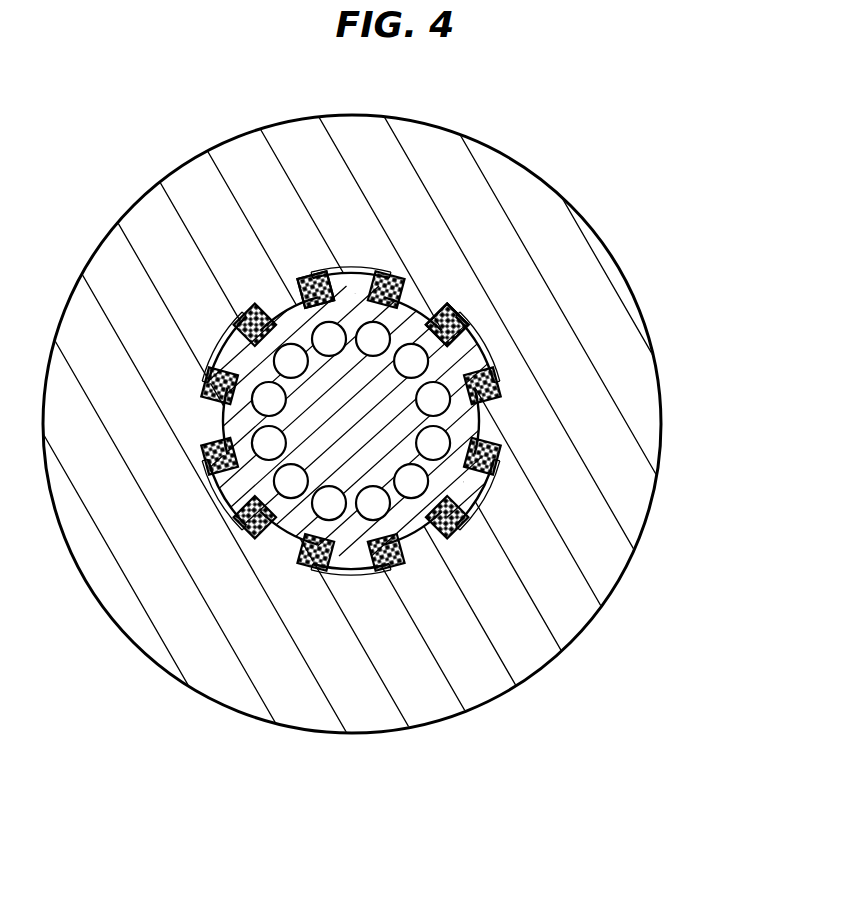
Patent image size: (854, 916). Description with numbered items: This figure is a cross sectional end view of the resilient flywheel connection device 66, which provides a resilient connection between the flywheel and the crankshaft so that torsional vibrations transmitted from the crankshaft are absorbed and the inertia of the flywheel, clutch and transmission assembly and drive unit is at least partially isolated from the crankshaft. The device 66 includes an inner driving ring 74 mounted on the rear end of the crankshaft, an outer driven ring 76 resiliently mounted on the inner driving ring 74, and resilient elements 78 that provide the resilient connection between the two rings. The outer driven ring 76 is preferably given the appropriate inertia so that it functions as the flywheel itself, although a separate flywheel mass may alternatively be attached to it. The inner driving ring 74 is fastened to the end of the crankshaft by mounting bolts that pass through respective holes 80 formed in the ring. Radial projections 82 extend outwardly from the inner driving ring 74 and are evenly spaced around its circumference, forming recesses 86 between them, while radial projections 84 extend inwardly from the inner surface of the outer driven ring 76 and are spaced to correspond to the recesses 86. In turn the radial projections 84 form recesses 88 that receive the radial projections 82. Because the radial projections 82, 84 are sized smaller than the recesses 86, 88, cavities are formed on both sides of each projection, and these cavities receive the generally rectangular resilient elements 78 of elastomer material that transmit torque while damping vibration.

The resilient flywheel connection device 66 is at (368, 424).
The inner driving ring 74 is at (395, 457).
The outer driven ring 76 is at (593, 483).
The resilient elements 78 is at (415, 300).
The holes 80 is at (296, 352).
The radial projections 82 is at (327, 332).
The radial projections 84 is at (430, 300).
The recesses 86 is at (216, 350).
The recesses 88 is at (311, 272).